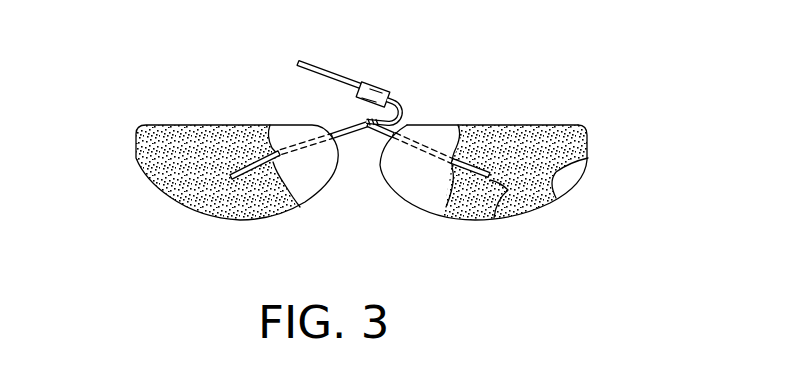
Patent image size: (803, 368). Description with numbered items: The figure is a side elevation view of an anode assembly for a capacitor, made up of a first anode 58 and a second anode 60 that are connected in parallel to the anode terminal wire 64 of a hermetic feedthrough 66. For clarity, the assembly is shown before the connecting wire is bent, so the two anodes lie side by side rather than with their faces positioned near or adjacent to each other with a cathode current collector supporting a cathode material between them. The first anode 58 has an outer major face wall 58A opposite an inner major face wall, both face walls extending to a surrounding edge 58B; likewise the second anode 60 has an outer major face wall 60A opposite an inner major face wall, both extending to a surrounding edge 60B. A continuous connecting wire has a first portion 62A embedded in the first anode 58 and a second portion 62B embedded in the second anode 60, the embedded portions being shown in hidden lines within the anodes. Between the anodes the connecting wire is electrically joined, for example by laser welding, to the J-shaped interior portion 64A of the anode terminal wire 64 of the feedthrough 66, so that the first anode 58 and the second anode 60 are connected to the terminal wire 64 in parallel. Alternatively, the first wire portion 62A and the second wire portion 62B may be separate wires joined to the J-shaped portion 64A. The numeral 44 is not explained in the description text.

The electrode 44 is at (476, 113).
The first anode 58 is at (520, 118).
The outer major face wall 58A is at (569, 183).
The surrounding edge 58B is at (588, 145).
The second anode 60 is at (177, 115).
The outer major face wall 60A is at (146, 181).
The surrounding edge 60B is at (137, 149).
The first portion 62A is at (494, 218).
The second portion 62B is at (224, 181).
The anode terminal wire 64 is at (318, 58).
The J-shaped interior portion 64A is at (366, 110).
The hermetic feedthrough 66 is at (384, 86).